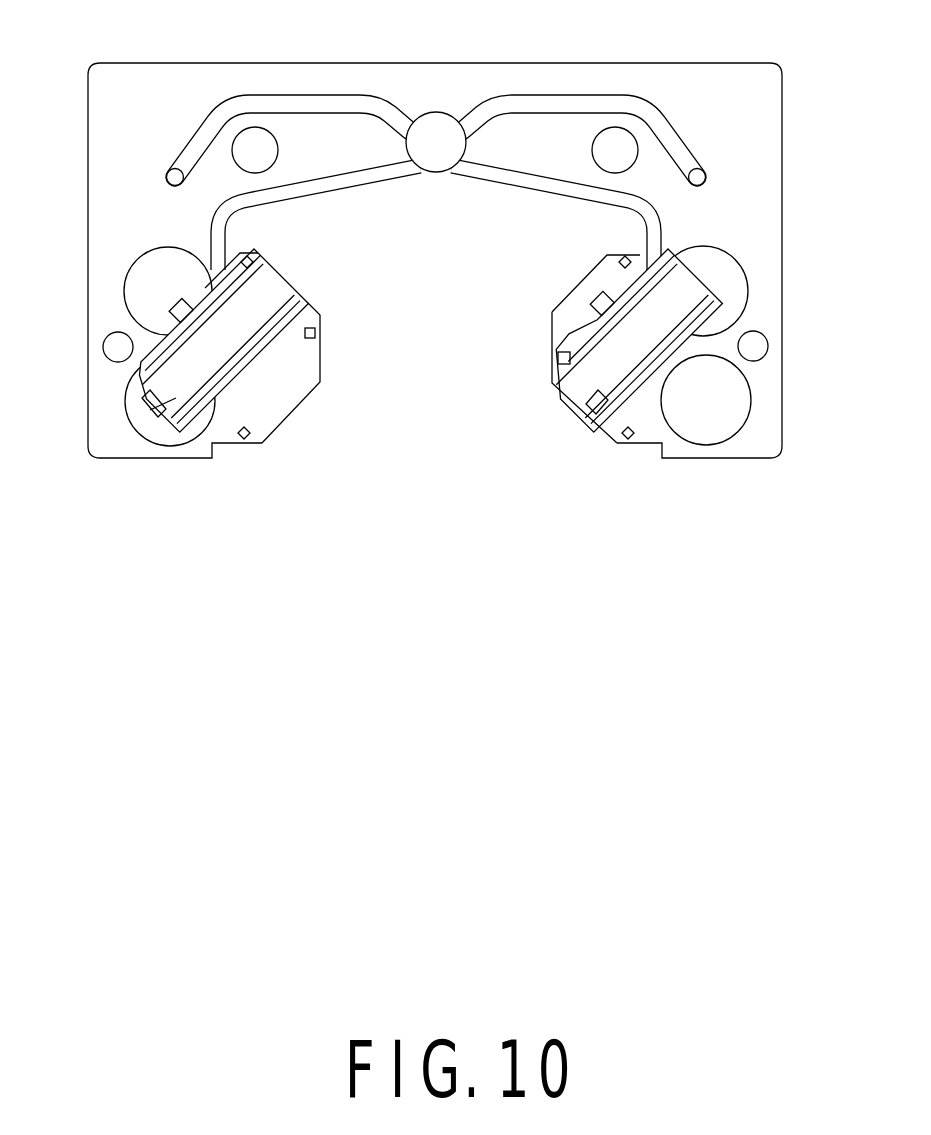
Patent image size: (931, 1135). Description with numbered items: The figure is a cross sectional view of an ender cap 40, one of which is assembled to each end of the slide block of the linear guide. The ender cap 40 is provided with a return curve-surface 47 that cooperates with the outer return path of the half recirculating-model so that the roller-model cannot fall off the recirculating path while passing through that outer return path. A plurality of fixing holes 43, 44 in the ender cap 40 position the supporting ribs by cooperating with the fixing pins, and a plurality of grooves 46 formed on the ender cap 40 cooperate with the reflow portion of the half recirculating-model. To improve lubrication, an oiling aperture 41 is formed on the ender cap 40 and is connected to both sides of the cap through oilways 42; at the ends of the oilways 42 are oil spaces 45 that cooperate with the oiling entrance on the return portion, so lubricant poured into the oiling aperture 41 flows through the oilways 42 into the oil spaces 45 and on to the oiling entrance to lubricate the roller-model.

The ender cap 40 is at (705, 93).
The oiling aperture 41 is at (437, 128).
The oilways 42 is at (215, 222).
The fixing hole 43 is at (262, 258).
The fixing hole 44 is at (316, 334).
The oil space 45 is at (160, 345).
The groove 46 is at (150, 290).
The return curve-surface 47 is at (150, 390).